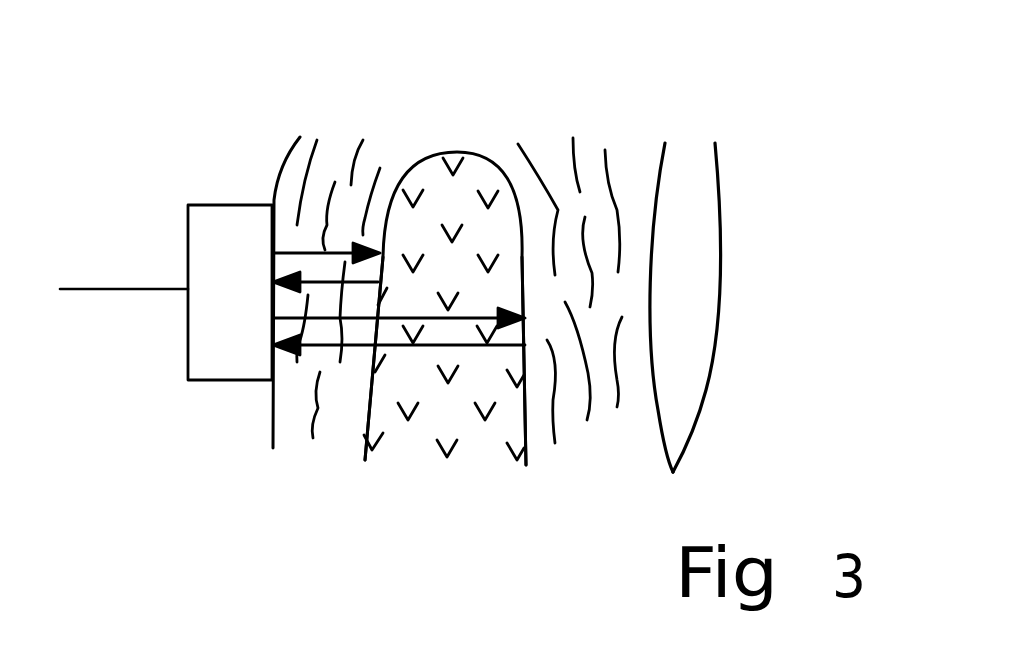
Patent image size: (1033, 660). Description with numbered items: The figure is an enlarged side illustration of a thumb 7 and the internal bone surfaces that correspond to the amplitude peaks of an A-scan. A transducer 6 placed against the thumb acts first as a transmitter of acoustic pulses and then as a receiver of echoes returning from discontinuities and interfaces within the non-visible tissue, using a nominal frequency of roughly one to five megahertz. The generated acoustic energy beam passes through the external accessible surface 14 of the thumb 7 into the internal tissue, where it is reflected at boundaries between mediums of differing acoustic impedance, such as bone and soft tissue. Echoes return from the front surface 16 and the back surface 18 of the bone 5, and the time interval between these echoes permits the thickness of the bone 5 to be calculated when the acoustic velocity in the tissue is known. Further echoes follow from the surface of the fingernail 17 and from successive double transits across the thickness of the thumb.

The bone 5 is at (460, 152).
The transducer 6 is at (187, 337).
The thumb 7 is at (235, 163).
The external accessible surface 14 is at (268, 423).
The front surface of the bone 16 is at (367, 402).
The fingernail 17 is at (692, 313).
The back surface of the bone 18 is at (525, 403).